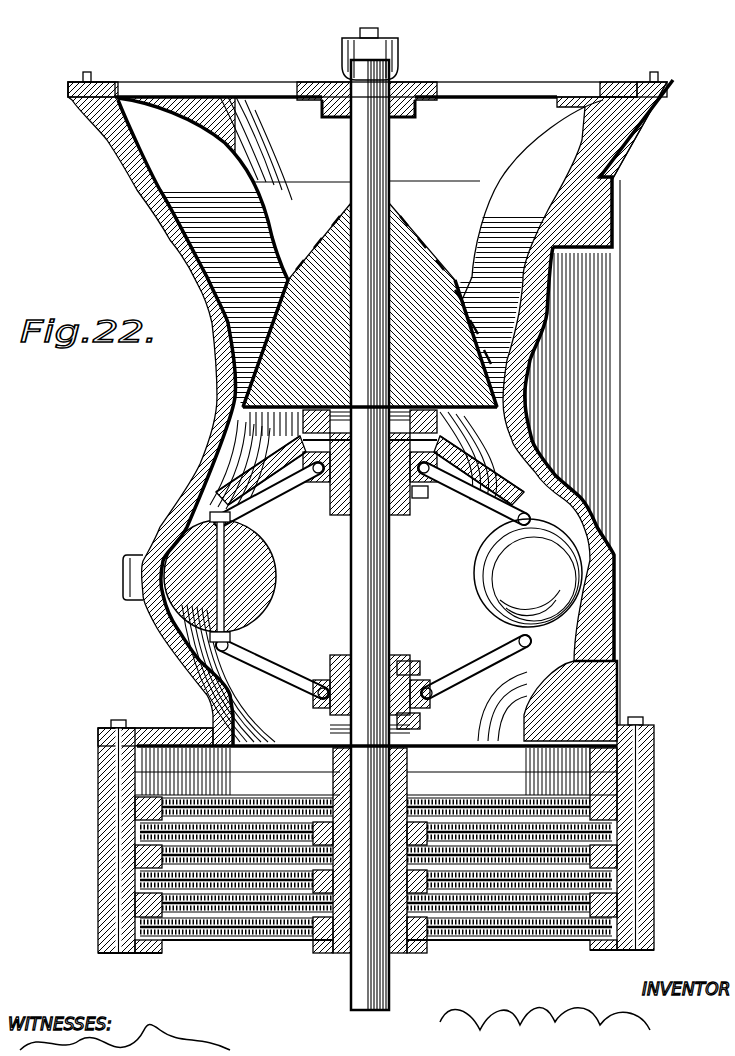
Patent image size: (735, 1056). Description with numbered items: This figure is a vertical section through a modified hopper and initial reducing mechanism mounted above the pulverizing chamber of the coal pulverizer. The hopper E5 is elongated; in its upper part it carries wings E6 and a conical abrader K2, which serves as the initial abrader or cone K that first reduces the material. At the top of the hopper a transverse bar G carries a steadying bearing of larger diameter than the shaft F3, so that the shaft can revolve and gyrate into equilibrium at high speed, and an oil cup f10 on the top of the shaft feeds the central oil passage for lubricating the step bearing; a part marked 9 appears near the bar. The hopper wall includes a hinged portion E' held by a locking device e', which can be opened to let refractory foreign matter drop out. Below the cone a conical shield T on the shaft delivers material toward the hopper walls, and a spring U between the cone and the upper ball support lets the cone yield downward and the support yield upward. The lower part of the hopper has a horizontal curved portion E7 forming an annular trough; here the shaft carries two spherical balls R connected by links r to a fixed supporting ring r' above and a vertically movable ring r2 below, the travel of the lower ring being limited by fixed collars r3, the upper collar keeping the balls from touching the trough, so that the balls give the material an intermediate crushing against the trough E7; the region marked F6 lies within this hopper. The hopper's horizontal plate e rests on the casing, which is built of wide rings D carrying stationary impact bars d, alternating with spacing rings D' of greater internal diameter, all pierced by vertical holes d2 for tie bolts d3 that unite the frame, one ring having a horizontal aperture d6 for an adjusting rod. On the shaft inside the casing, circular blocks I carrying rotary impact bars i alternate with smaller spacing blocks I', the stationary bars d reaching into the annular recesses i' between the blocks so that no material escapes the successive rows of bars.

The oil cup f10 is at (345, 58).
The hub bearing 9 is at (405, 80).
The transverse bar G is at (545, 82).
The hopper E5 is at (165, 205).
The wings E6 is at (225, 283).
The abrader K is at (327, 223).
The shaft F3 is at (392, 150).
The hinged portion E' is at (434, 172).
The casing chamber F6 is at (556, 370).
The horizontal curved portion E7 is at (620, 528).
The conical abrader K2 is at (300, 347).
The horizontal aperture d6 is at (318, 425).
The spring U is at (237, 455).
The shield T is at (477, 467).
The links r is at (372, 580).
The fixed supporting ring r' is at (370, 495).
The vertically movable ring r2 is at (404, 675).
The fixed collars r3 is at (340, 665).
The spherical balls R is at (276, 584).
The locking device e' is at (110, 575).
The horizontal plate e is at (357, 703).
The wide rings D is at (381, 836).
The spacing rings D' is at (381, 833).
The stationary impact bars d is at (447, 815).
The vertical holes d2 is at (98, 905).
The tie bolts d3 is at (112, 940).
The circular blocks I is at (380, 866).
The circular spacing blocks I' is at (410, 872).
The rotary impact bars i is at (376, 884).
The annular recesses i' is at (376, 784).